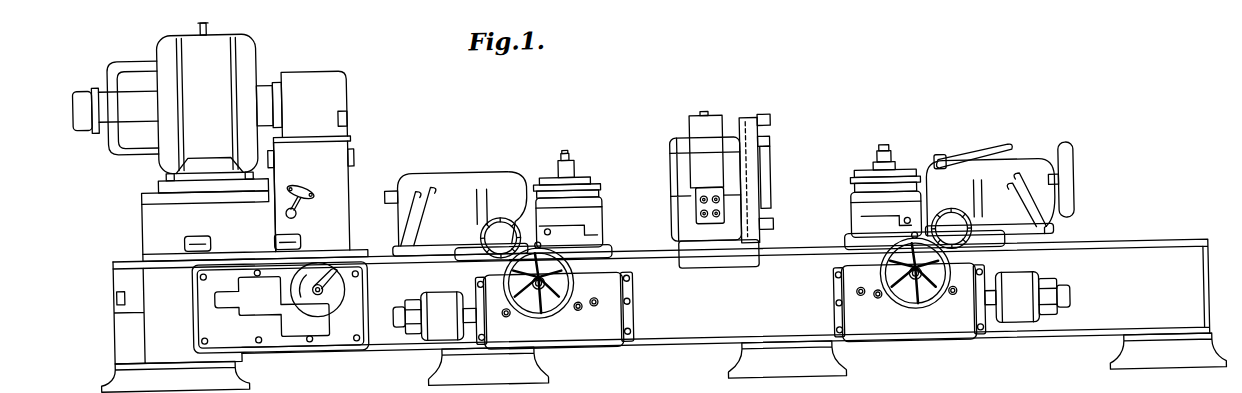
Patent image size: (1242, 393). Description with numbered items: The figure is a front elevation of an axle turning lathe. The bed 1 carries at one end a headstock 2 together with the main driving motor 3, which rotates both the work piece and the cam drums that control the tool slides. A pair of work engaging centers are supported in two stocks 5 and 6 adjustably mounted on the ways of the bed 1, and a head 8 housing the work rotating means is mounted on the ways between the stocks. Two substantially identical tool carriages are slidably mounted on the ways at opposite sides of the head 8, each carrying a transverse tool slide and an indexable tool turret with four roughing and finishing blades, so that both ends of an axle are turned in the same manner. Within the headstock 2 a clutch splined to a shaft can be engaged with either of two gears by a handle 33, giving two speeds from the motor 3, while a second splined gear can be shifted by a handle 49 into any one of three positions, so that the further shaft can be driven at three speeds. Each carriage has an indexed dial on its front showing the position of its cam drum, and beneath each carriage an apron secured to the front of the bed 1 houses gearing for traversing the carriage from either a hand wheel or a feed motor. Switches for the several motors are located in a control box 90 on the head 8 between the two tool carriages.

The bed 1 is at (681, 350).
The headstock 2 is at (332, 158).
The main driving motor 3 is at (243, 57).
The stock 5 is at (457, 187).
The stock 6 is at (1025, 180).
The head 8 is at (694, 130).
The handle 33 is at (286, 212).
The handle 49 is at (326, 282).
The control box 90 is at (710, 237).